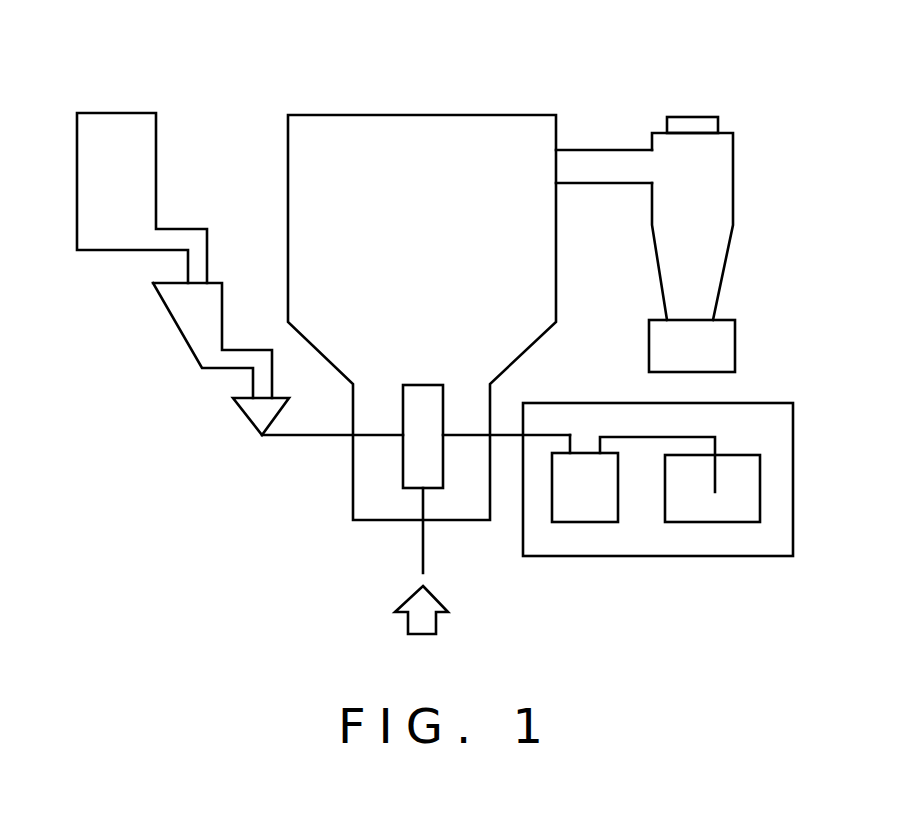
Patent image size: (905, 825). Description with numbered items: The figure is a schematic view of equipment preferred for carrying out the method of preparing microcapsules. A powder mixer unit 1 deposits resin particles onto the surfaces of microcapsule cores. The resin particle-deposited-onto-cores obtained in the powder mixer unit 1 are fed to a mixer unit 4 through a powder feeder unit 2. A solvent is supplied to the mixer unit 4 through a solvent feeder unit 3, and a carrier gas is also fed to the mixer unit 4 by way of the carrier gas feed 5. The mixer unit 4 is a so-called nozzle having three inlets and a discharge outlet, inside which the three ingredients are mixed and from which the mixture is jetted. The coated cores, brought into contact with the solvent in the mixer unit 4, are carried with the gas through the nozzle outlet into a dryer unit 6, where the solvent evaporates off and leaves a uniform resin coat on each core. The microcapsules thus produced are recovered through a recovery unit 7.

The powder mixer unit 1 is at (87, 164).
The powder feeder unit 2 is at (190, 334).
The solvent feeder unit 3 is at (781, 487).
The mixer unit 4 is at (423, 397).
The carrier gas feed 5 is at (430, 625).
The dryer unit 6 is at (483, 138).
The recovery unit 7 is at (718, 186).